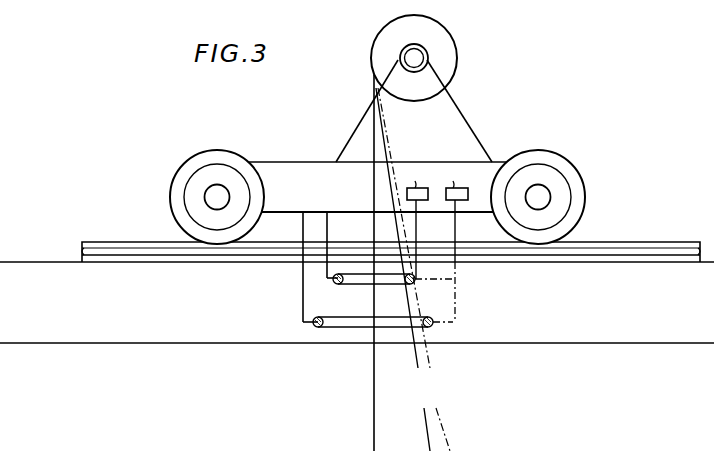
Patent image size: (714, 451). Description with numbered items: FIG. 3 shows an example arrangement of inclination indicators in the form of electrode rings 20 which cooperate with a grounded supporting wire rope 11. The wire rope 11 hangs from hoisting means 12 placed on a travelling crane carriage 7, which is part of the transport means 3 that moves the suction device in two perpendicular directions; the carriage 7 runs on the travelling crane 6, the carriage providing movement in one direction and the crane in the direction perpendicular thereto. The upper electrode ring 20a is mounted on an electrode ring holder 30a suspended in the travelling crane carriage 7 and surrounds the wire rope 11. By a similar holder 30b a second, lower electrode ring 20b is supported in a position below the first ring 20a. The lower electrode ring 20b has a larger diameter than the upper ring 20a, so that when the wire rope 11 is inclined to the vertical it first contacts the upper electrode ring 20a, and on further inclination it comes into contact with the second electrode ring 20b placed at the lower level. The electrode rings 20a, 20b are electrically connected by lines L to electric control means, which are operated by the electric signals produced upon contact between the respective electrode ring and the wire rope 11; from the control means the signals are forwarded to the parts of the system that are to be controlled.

The transport means 3 is at (588, 242).
The travelling crane 6 is at (142, 244).
The travelling crane carriage 7 is at (305, 176).
The wire rope 11 is at (434, 371).
The hoisting means 12 is at (446, 42).
The electrode rings 20 is at (424, 280).
The upper electrode ring 20a is at (351, 284).
The lower electrode ring 20b is at (338, 327).
The electrode ring holder 30a is at (328, 272).
The electrode ring holder 30b is at (304, 304).
The lines L is at (418, 205).